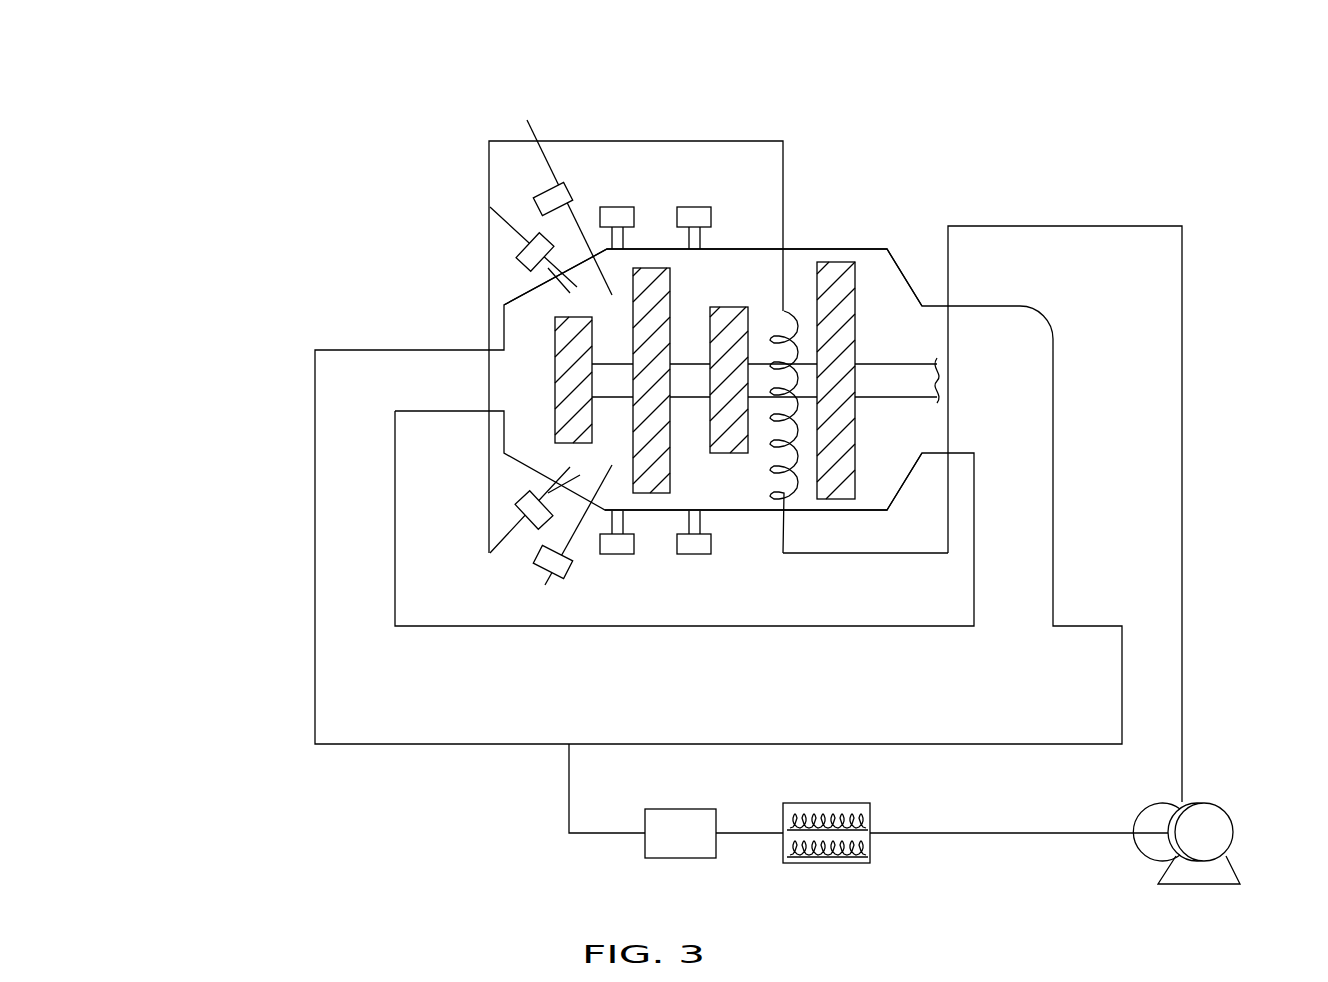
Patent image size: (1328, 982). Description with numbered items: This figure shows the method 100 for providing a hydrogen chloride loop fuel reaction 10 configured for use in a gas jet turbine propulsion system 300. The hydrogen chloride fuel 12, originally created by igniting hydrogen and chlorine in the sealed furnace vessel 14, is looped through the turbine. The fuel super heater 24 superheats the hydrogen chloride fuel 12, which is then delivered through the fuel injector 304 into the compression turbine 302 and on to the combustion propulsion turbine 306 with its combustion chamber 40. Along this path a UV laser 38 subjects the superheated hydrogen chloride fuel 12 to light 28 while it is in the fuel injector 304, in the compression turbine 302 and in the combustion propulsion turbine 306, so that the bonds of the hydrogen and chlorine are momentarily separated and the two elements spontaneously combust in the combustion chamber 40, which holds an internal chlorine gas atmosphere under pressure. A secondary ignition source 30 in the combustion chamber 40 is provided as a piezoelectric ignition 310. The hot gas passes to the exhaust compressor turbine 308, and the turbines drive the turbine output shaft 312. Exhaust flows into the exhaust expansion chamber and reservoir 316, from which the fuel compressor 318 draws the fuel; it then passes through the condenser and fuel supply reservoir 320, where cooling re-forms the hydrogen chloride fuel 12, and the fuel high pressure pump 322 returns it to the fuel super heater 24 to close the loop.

The hydrogen chloride loop fuel reaction 10 is at (1228, 66).
The method for providing hydrogen chloride loop fuel reaction 100 is at (1162, 92).
The gas jet turbine propulsion system 300 is at (1182, 145).
The hydrogen chloride fuel 12 is at (908, 213).
The sealed furnace vessel 14 is at (302, 298).
The fuel super heater 24 is at (772, 440).
The light 28 is at (742, 246).
The secondary ignition source 30 is at (547, 343).
The piezoelectric ignition 310 is at (527, 130).
The UV laser 38 is at (607, 205).
The combustion chamber 40 is at (798, 245).
The compression turbine 302 is at (553, 355).
The fuel injector 304 is at (517, 255).
The combustion propulsion turbine 306 is at (735, 305).
The exhaust compressor turbine 308 is at (858, 310).
The turbine output shaft 312 is at (885, 387).
The exhaust expansion chamber and reservoir 316 is at (984, 702).
The fuel compressor 318 is at (643, 845).
The condenser and fuel supply reservoir 320 is at (828, 865).
The fuel high pressure pump 322 is at (1233, 833).